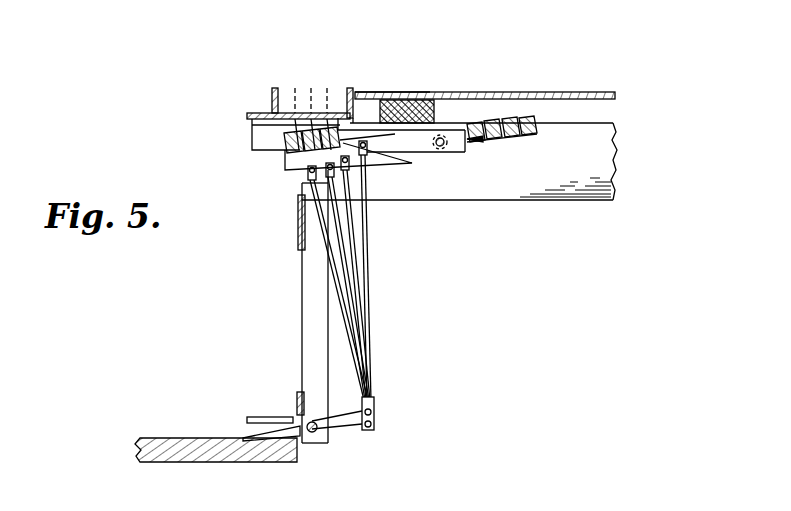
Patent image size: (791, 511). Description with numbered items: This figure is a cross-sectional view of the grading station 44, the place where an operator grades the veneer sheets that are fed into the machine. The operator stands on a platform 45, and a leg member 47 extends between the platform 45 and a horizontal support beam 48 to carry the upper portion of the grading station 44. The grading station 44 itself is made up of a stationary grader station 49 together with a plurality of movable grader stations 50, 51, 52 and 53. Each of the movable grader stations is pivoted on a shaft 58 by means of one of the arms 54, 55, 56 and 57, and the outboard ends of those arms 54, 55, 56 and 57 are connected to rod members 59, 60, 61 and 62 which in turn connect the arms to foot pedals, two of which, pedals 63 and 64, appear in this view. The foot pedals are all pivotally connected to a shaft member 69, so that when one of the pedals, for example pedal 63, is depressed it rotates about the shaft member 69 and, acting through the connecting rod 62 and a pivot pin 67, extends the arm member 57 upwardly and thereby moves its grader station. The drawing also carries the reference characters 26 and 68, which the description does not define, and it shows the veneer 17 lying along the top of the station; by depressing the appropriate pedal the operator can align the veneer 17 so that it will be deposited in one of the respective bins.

The veneer 17 is at (500, 94).
The block 26 is at (433, 103).
The grading station 44 is at (430, 90).
The platform 45 is at (145, 437).
The leg member 47 is at (302, 326).
The horizontal support beam 48 is at (557, 200).
The stationary grader station 49 is at (272, 103).
The movable grader station 50 is at (295, 110).
The movable grader station 51 is at (311, 100).
The movable grader station 52 is at (327, 110).
The movable grader station 53 is at (350, 96).
The arm 54 is at (540, 126).
The arm 55 is at (512, 138).
The arm 56 is at (498, 140).
The arm 57 is at (482, 143).
The shaft 58 is at (437, 150).
The rod member 59 is at (331, 257).
The rod member 60 is at (345, 278).
The rod member 61 is at (357, 244).
The connecting rod 62 is at (371, 280).
The foot pedal 63 is at (250, 433).
The foot pedal 64 is at (260, 420).
The pivot pin 67 is at (375, 412).
The pivot pin 68 is at (375, 425).
The shaft member 69 is at (312, 412).